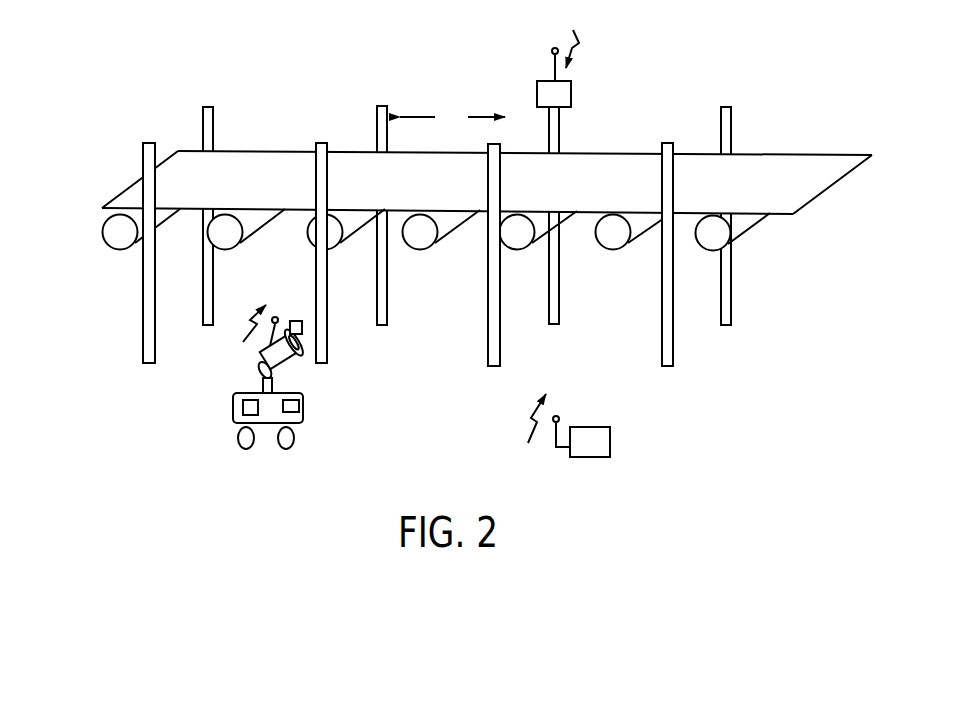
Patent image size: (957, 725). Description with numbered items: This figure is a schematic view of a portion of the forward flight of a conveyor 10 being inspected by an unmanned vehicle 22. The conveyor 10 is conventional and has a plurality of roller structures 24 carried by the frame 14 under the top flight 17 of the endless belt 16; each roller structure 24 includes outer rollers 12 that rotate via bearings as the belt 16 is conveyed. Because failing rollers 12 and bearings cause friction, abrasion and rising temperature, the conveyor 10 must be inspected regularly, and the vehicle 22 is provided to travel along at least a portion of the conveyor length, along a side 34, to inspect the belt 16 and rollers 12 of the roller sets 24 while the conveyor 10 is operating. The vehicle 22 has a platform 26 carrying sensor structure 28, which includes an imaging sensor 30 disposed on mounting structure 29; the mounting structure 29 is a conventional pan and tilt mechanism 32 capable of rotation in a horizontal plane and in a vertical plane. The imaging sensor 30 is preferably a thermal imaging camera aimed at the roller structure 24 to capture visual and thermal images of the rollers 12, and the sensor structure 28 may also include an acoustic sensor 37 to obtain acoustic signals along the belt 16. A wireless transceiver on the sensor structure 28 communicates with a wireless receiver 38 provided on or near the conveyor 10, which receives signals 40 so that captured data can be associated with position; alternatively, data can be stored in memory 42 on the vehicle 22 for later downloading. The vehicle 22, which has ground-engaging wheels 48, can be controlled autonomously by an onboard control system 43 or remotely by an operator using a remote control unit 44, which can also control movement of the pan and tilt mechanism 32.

The conveyor 10 is at (464, 227).
The outer rollers 12 is at (112, 232).
The frame 14 is at (501, 318).
The belt 16 is at (487, 186).
The top flight 17 is at (487, 186).
The unmanned vehicle 22 is at (269, 376).
The roller structures 24 is at (117, 254).
The platform 26 is at (289, 419).
The sensor structure 28 is at (332, 318).
The mounting structure 29 is at (258, 368).
The imaging sensor 30 is at (303, 352).
The pan and tilt mechanism 32 is at (258, 380).
The side 34 is at (787, 216).
The acoustic sensor 37 is at (294, 320).
The wireless receiver 38 is at (571, 93).
The signals 40 is at (581, 38).
The memory 42 is at (296, 407).
The onboard control system 43 is at (251, 409).
The remote control unit 44 is at (611, 437).
The wheels 48 is at (292, 450).